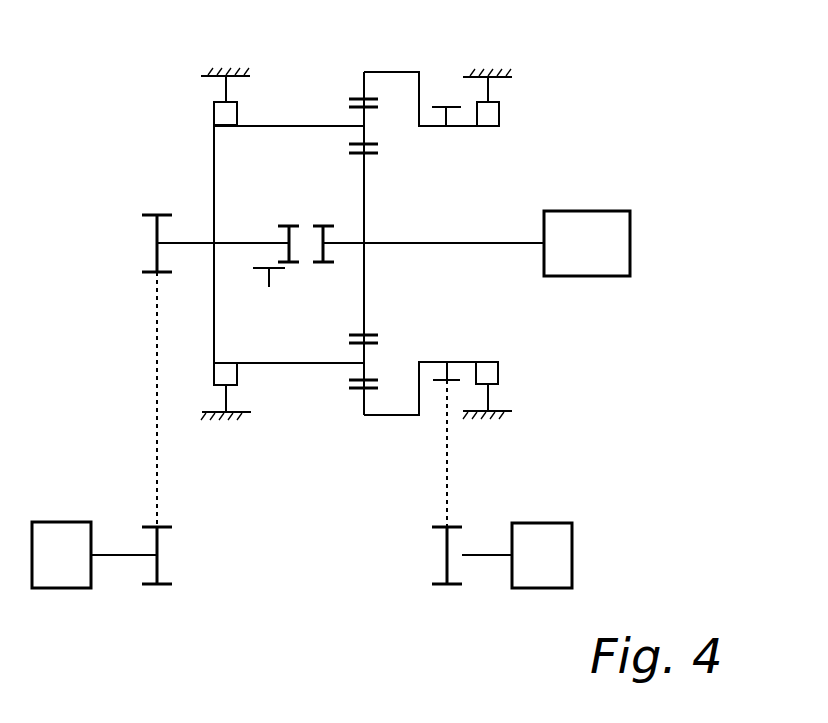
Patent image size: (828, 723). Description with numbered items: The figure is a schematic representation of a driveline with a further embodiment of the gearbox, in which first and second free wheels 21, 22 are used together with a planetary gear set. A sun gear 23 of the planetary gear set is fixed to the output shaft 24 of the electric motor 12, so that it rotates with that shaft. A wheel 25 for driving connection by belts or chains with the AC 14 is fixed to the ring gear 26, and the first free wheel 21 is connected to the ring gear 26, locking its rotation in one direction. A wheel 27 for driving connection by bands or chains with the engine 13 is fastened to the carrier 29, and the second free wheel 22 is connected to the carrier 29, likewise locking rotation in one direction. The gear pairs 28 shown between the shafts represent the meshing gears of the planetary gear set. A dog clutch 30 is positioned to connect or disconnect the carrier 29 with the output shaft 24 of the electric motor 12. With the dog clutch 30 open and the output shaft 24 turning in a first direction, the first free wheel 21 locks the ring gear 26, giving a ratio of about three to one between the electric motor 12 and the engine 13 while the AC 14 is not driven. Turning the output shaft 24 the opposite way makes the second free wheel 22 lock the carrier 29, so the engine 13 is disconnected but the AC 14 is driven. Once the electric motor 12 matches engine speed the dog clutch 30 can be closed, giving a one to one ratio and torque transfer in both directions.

The electric motor 12 is at (628, 232).
The engine 13 is at (62, 528).
The AC 14 is at (550, 588).
The first free wheel 21 is at (490, 110).
The second free wheel 22 is at (215, 113).
The sun gear 23 is at (364, 284).
The output shaft 24 is at (487, 245).
The wheel 25 is at (447, 370).
The ring gear 26 is at (405, 72).
The wheel 27 is at (155, 228).
The gear pair 28 is at (367, 131).
The carrier 29 is at (305, 364).
The dog clutch 30 is at (253, 269).